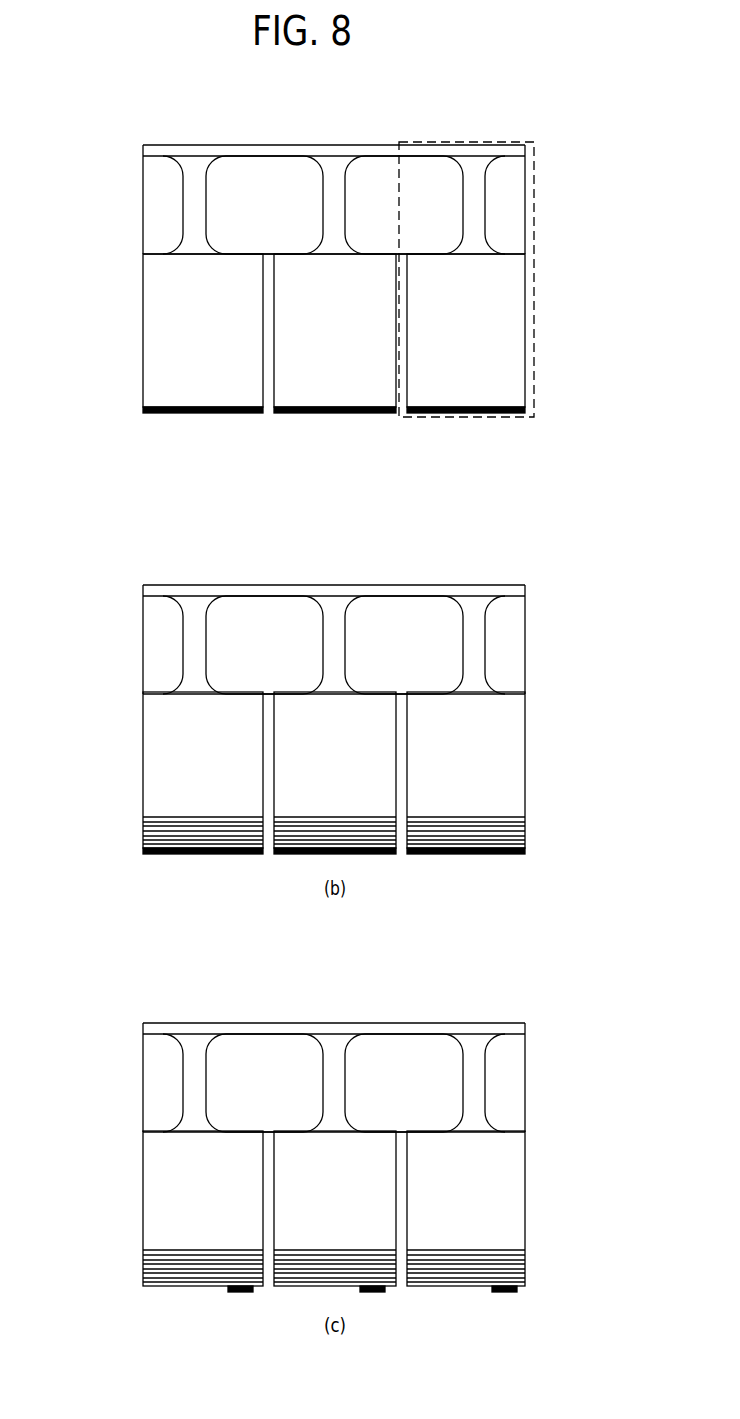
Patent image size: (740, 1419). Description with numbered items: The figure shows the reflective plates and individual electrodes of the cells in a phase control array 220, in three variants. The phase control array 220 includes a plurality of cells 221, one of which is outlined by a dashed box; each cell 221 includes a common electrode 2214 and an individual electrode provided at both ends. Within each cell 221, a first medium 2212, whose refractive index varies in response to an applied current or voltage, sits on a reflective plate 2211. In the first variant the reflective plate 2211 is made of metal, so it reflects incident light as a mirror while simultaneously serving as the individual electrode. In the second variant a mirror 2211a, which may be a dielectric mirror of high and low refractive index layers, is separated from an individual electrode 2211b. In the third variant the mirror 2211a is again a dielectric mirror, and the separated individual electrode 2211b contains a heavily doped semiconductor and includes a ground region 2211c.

The phase control array 220 is at (89, 133).
The cell 221 is at (534, 277).
The common electrode 2214 is at (160, 207).
The first medium 2212 is at (160, 325).
The reflective plate 2211 is at (143, 410).
The mirror 2211a is at (522, 818).
The individual electrode 2211b is at (525, 848).
The ground region 2211c is at (510, 1292).